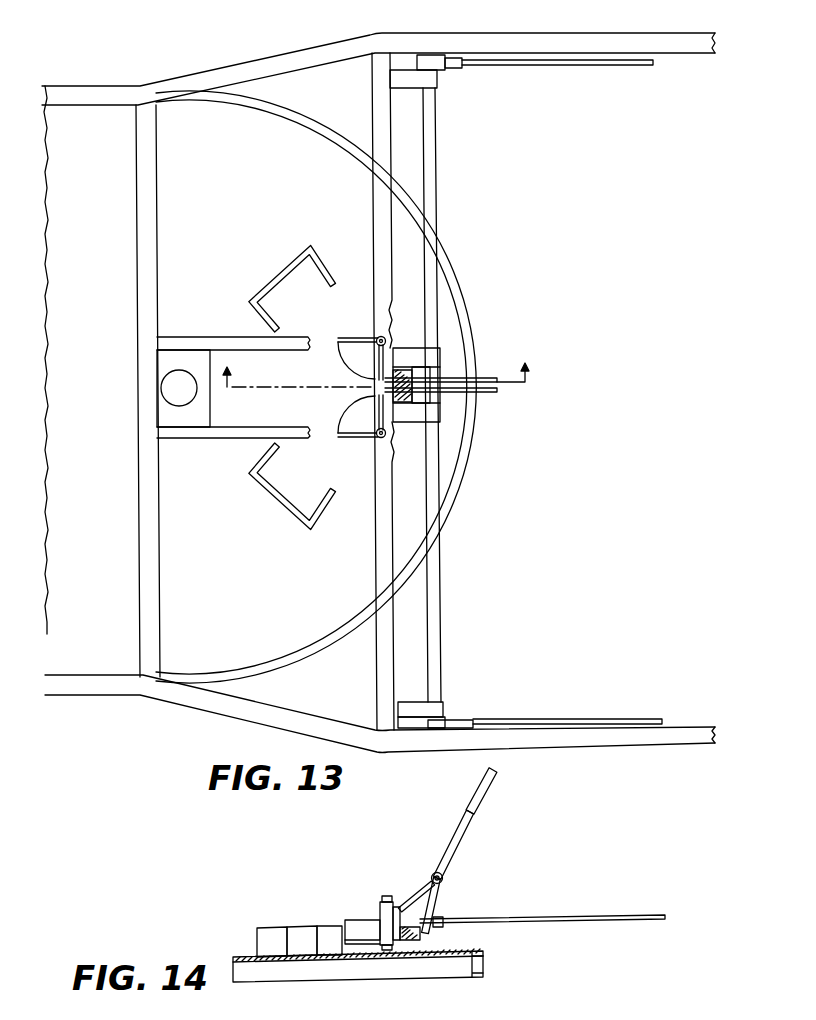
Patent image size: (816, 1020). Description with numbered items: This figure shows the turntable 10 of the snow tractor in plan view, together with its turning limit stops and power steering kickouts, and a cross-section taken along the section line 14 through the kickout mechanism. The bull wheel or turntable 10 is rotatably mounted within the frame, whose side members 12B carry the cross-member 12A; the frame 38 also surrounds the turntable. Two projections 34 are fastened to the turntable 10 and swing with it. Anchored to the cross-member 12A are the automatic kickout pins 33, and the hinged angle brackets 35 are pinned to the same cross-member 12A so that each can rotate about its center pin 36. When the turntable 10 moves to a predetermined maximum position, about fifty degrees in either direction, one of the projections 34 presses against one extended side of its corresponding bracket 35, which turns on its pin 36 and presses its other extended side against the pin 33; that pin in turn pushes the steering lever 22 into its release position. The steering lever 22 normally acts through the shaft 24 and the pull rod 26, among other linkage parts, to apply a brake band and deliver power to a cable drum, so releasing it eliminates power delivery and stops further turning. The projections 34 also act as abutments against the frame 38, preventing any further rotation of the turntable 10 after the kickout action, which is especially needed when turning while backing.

In FIG. 13, the turntable 10 is at (292, 662).
In FIG. 14, the turntable 10 is at (485, 968).
In FIG. 13, the cross-member 12A is at (372, 195).
In FIG. 14, the cross-member 12A is at (398, 912).
In FIG. 13, the side members 12B is at (311, 47).
In FIG. 13, the section line 14— 14 is at (370, 368).
In FIG. 13, the steering lever 22 is at (485, 380).
In FIG. 14, the steering lever 22 is at (458, 842).
In FIG. 13, the shaft 24 is at (438, 206).
In FIG. 14, the shaft 24 is at (445, 880).
In FIG. 13, the pull rod 26 is at (628, 66).
In FIG. 14, the pull rod 26 is at (646, 913).
In FIG. 13, the automatic kickout pin 33 is at (386, 338).
In FIG. 14, the automatic kickout pin 33 is at (416, 936).
In FIG. 13, the projection 34 is at (323, 262).
In FIG. 14, the projection 34 is at (330, 926).
In FIG. 13, the hinged angle bracket 35 is at (343, 337).
In FIG. 14, the hinged angle bracket 35 is at (362, 920).
In FIG. 13, the center pin 36 is at (372, 349).
In FIG. 14, the center pin 36 is at (400, 900).
In FIG. 13, the frame 38 is at (163, 567).